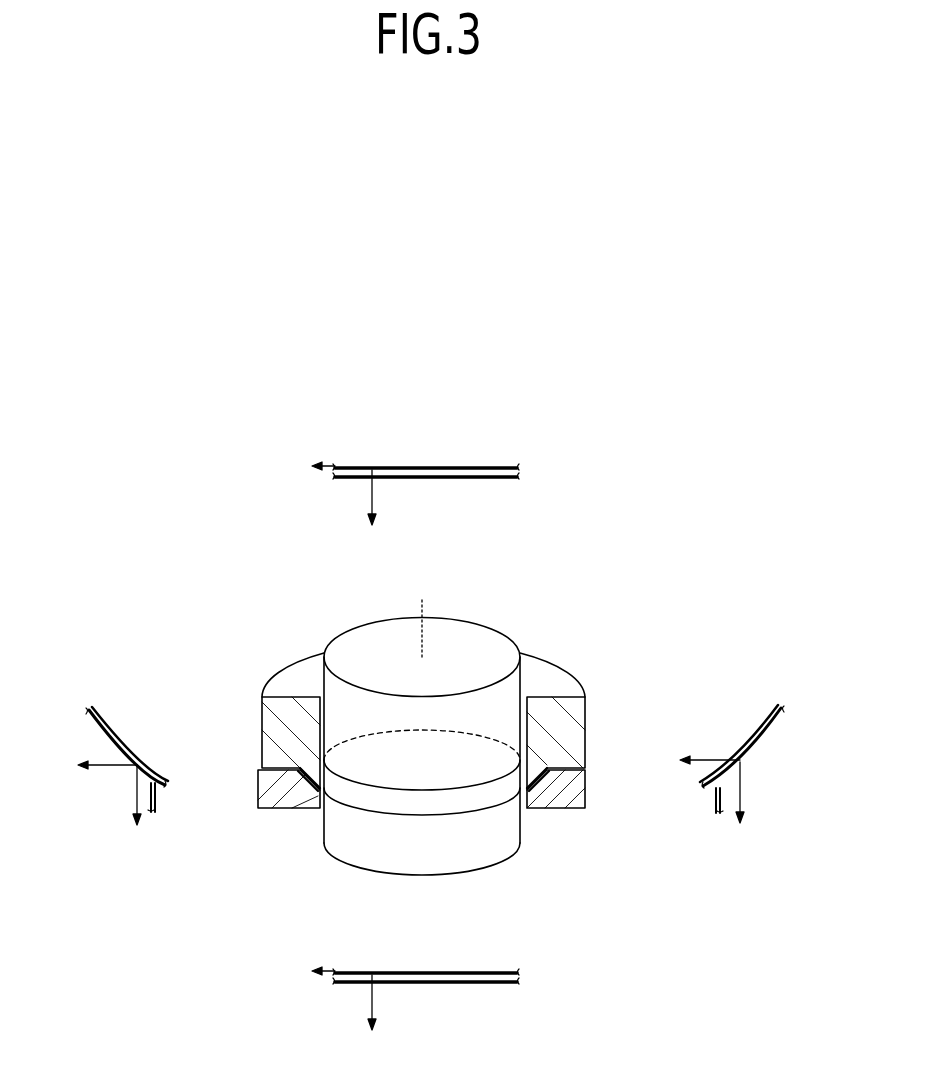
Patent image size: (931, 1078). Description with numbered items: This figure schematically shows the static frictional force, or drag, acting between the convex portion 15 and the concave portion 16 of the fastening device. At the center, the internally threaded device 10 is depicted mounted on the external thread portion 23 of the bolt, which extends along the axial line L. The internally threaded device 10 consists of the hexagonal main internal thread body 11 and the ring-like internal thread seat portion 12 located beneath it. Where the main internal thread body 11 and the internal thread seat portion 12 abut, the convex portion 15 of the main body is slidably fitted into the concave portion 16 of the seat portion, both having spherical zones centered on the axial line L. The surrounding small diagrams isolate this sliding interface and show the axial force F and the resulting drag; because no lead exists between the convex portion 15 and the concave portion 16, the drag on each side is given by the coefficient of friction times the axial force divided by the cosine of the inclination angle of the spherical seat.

The internally threaded device 10 is at (552, 660).
The main internal thread body 11 is at (262, 720).
The internal thread seat portion 12 is at (258, 790).
The convex portion 15 is at (442, 467).
The concave portion 16 is at (483, 479).
The external thread portion 23 is at (498, 640).
The axial line L is at (412, 612).